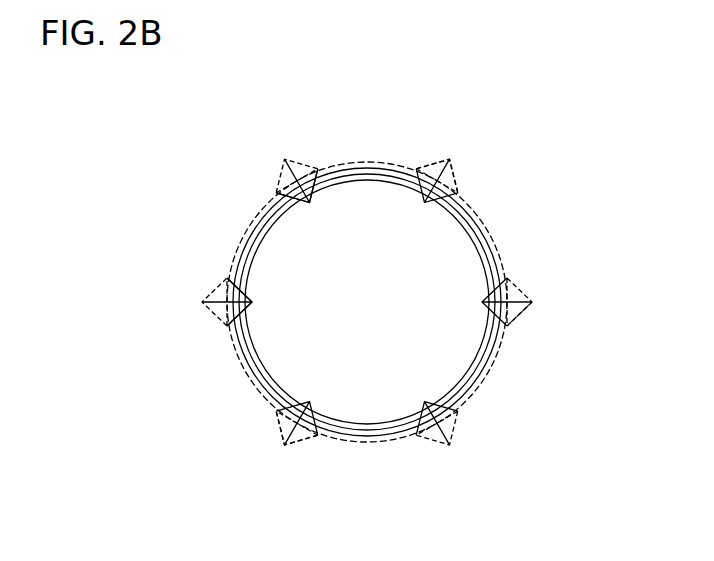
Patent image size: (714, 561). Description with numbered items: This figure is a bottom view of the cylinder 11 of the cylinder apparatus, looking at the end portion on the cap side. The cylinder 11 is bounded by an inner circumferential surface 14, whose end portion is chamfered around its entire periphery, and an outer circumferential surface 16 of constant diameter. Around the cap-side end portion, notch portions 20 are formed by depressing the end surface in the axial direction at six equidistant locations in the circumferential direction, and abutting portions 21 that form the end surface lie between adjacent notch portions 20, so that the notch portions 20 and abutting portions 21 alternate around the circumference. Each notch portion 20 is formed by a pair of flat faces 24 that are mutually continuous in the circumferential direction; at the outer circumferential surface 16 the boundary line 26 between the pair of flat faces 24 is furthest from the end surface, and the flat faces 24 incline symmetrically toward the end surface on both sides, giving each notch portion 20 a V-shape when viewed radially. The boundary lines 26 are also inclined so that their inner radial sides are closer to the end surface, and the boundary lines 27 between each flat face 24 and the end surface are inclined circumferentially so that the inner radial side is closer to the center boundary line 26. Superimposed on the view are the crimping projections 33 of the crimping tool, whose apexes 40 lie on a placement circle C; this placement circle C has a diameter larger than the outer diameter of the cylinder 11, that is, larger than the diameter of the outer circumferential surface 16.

The cylinder 11 is at (412, 347).
The inner circumferential surface 14 is at (477, 236).
The outer circumferential surface 16 is at (487, 226).
The notch portion 20 is at (505, 298).
The abutting portion 21 is at (248, 237).
The flat face 24 is at (437, 180).
The boundary line 26 is at (303, 176).
The boundary line 27 is at (312, 183).
The crimping projection 33 is at (447, 162).
The apex 40 is at (518, 315).
The placement circle C is at (487, 380).